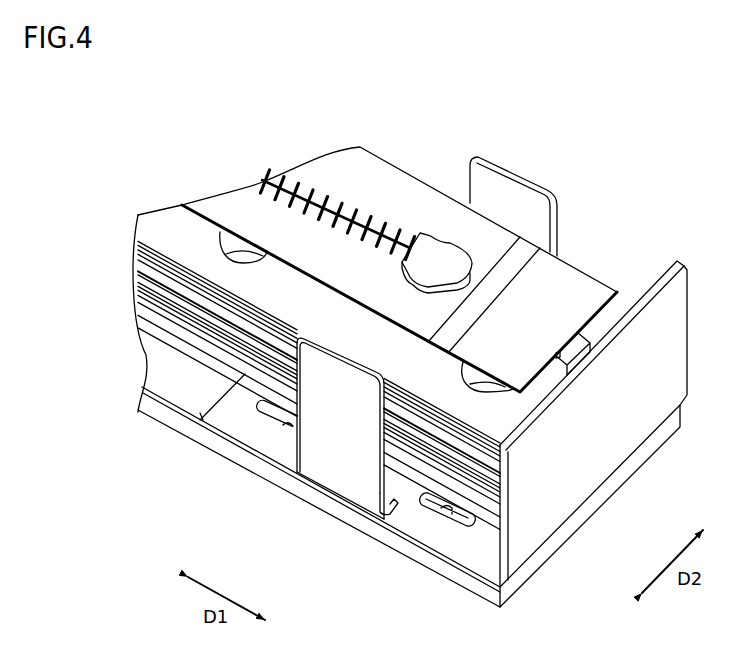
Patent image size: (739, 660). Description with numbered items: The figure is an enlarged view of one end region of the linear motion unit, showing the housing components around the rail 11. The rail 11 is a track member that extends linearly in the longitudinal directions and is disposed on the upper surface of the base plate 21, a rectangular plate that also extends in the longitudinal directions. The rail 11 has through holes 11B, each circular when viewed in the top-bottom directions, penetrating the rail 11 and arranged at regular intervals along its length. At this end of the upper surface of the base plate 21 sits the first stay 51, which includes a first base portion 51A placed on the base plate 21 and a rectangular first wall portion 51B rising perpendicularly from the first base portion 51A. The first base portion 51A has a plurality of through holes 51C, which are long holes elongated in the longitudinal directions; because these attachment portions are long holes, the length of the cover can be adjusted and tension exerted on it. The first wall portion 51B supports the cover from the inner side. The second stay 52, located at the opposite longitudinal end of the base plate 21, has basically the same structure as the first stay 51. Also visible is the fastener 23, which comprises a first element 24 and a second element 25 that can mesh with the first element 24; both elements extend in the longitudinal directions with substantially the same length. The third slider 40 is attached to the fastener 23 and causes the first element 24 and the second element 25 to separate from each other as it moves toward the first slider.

The rail 11 is at (163, 223).
The through hole 11B is at (231, 247).
The base plate 21 is at (472, 582).
The fastener 23 is at (395, 103).
The first element 24 is at (366, 170).
The second element 25 is at (302, 232).
The third slider 40 is at (443, 252).
The first stay 51 is at (610, 443).
The first base portion 51A is at (232, 402).
The first wall portion 51B is at (343, 468).
The through hole 51C is at (271, 416).
The second stay 52 is at (190, 385).